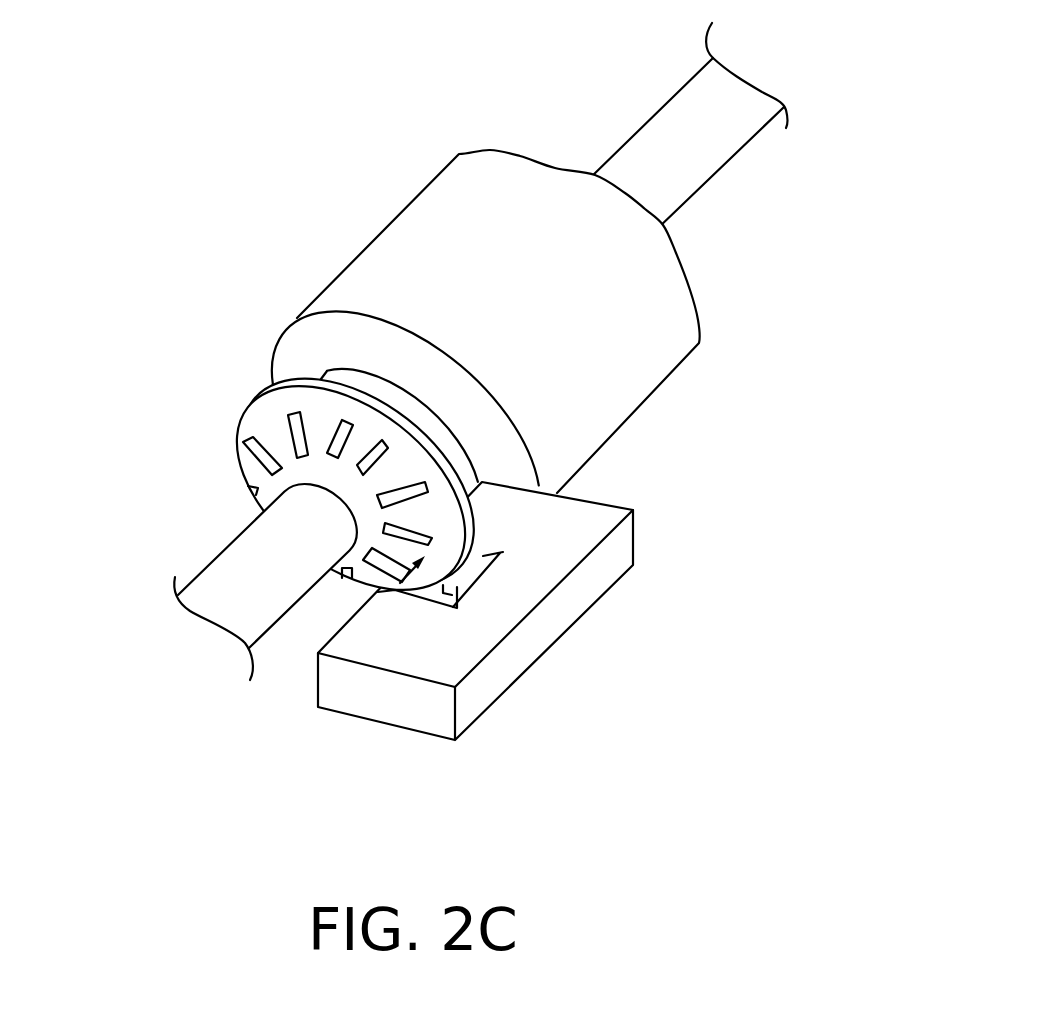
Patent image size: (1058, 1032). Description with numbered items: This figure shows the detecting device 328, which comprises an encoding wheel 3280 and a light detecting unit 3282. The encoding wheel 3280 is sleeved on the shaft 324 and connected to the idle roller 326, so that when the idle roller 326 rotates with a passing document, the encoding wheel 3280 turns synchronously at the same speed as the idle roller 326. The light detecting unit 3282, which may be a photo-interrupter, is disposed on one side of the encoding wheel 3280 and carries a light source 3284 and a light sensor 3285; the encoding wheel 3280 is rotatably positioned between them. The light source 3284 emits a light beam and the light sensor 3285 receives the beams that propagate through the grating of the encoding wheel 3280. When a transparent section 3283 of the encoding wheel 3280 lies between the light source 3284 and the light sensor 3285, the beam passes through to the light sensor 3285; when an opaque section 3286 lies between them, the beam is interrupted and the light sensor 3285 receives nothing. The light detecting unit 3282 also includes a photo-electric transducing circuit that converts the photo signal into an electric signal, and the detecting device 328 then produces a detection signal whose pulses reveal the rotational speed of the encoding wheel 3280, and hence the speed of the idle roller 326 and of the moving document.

The shaft 324 is at (653, 115).
The idle roller 326 is at (405, 208).
The detecting device 328 is at (166, 475).
The encoding wheel 3280 is at (242, 411).
The light detecting unit 3282 is at (600, 595).
The transparent section 3283 is at (377, 565).
The light source 3284 is at (377, 588).
The light sensor 3285 is at (488, 560).
The opaque section 3286 is at (422, 523).